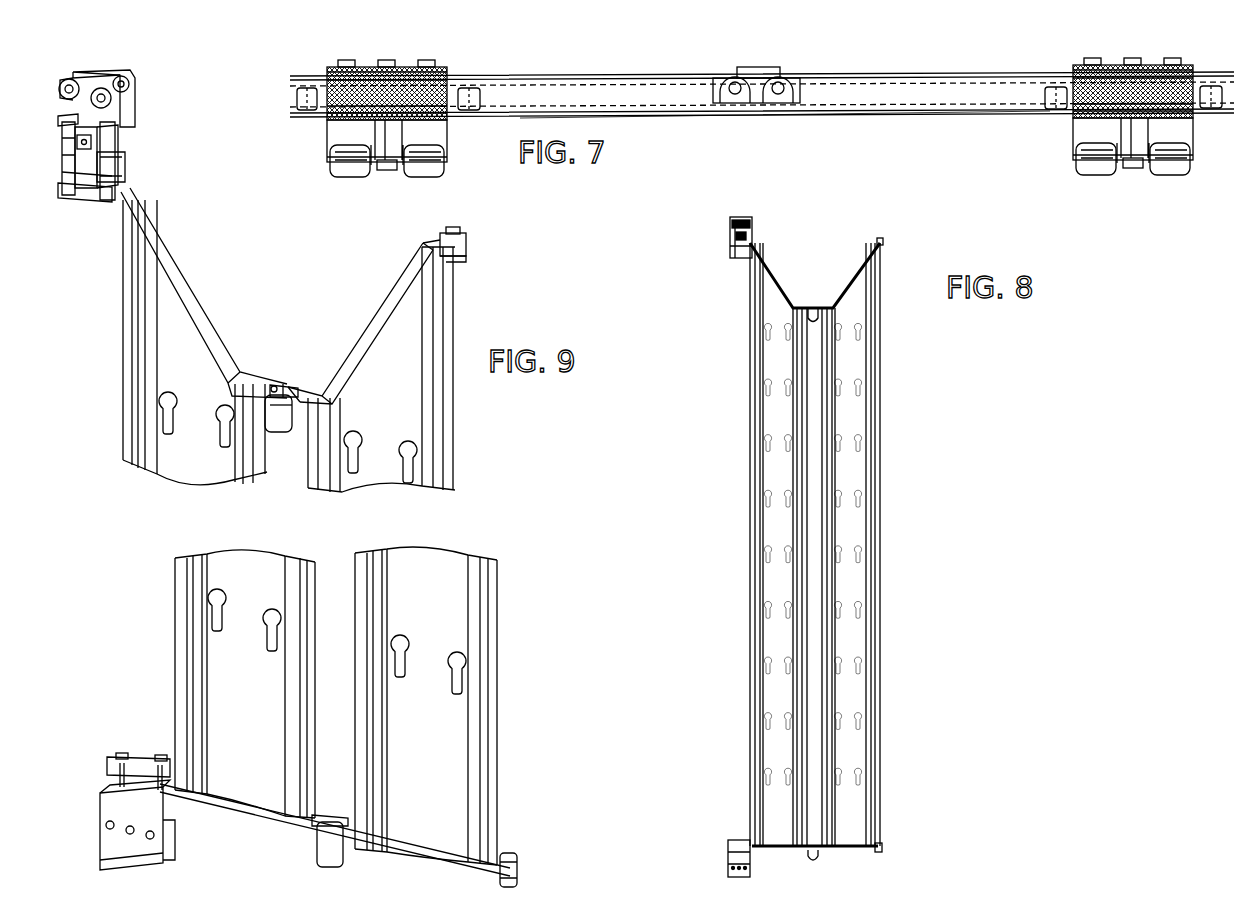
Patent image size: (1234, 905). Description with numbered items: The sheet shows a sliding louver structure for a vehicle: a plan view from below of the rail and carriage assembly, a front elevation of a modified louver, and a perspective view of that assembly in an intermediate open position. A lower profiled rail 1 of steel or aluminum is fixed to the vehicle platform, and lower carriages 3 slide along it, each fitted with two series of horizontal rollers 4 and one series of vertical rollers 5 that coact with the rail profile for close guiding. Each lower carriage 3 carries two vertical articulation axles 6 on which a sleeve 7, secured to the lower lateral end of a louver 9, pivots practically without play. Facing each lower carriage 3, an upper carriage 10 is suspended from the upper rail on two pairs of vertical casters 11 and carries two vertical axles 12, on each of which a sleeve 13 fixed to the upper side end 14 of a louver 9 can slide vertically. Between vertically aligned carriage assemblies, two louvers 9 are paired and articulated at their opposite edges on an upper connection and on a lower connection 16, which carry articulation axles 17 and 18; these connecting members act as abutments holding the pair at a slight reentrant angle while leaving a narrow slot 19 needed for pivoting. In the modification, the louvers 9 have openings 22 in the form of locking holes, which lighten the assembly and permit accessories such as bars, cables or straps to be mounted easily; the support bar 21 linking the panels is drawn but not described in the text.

In FIG. 7, the lower profiled rail 1 is at (694, 112).
In FIG. 7, the lower carriage 3 is at (432, 133).
In FIG. 9, the lower carriage 3 is at (150, 818).
In FIG. 9, the horizontal rollers 4 is at (180, 850).
In FIG. 9, the vertical rollers 5 is at (170, 838).
In FIG. 9, the vertical articulation axles 6 is at (122, 768).
In FIG. 9, the sleeve 7 is at (515, 862).
In FIG. 7, the louver 9 is at (641, 90).
In FIG. 9, the louver 9 is at (168, 332).
In FIG. 8, the louver 9 is at (758, 460).
In FIG. 9, the upper carriage 10 is at (88, 164).
In FIG. 9, the vertical casters 11 is at (115, 78).
In FIG. 9, the vertical axles 12 is at (68, 170).
In FIG. 9, the sleeve 13 is at (127, 156).
In FIG. 9, the upper side end 14 is at (283, 393).
In FIG. 7, the lower connection 16 is at (757, 75).
In FIG. 9, the articulation axle 17 is at (273, 386).
In FIG. 7, the articulation axle 18 is at (779, 94).
In FIG. 9, the narrow slot 19 is at (333, 647).
In FIG. 8, the narrow slot 19 is at (815, 588).
In FIG. 9, the support bar 21 is at (180, 265).
In FIG. 9, the openings 22 is at (460, 668).
In FIG. 8, the openings 22 is at (765, 500).